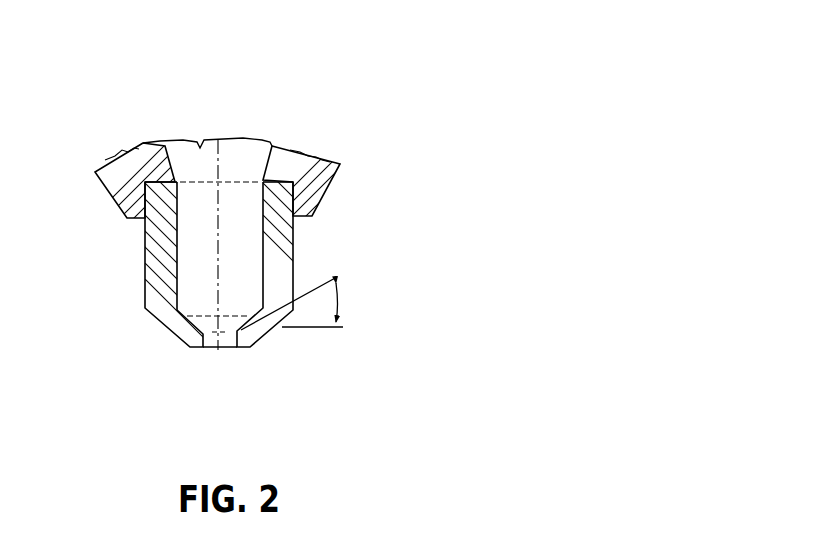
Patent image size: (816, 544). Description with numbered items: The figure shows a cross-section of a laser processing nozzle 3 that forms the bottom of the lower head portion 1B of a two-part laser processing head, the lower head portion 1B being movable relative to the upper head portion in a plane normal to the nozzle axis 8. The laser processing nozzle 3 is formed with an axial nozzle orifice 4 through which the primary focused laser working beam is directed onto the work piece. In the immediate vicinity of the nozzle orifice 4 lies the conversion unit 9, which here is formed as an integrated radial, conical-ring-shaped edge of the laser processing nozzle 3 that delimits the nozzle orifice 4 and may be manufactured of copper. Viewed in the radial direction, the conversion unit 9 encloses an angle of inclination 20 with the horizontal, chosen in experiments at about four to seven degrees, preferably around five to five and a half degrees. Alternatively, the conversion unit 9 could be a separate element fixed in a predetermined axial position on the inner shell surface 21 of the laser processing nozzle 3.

The lower head portion 1B is at (288, 163).
The laser processing nozzle 3 is at (283, 237).
The nozzle orifice 4 is at (260, 316).
The nozzle axis 8 is at (218, 252).
The conversion unit 9 is at (246, 320).
The angle of inclination 20 is at (333, 305).
The inner shell surface 21 is at (261, 213).